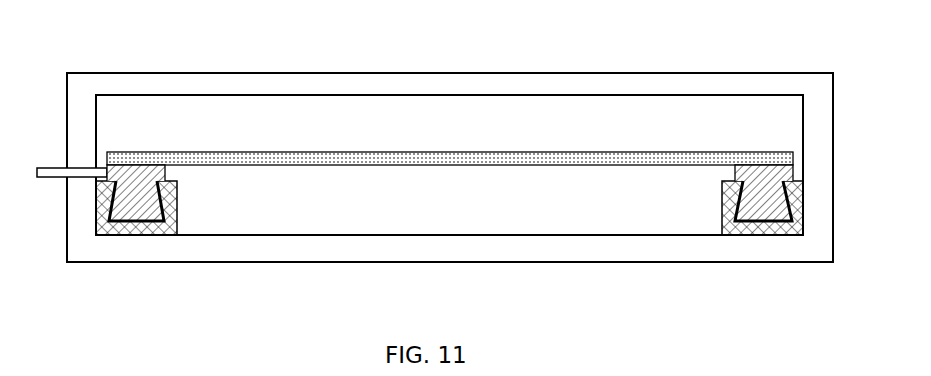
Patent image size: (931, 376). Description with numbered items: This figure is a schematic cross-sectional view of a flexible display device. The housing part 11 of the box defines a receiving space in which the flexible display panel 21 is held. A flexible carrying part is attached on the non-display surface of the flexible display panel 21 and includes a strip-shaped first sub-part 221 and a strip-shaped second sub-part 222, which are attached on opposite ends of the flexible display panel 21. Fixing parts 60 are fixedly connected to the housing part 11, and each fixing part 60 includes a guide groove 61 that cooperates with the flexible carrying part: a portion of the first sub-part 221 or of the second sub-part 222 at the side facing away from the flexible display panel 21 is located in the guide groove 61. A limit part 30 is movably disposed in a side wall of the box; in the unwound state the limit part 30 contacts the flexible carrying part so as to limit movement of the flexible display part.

The housing part 11 is at (340, 83).
The flexible display panel 21 is at (307, 160).
The limit part 30 is at (45, 167).
The fixing part 60 is at (147, 233).
The guide groove 61 is at (143, 227).
The first sub-part 221 is at (110, 234).
The second sub-part 222 is at (745, 220).